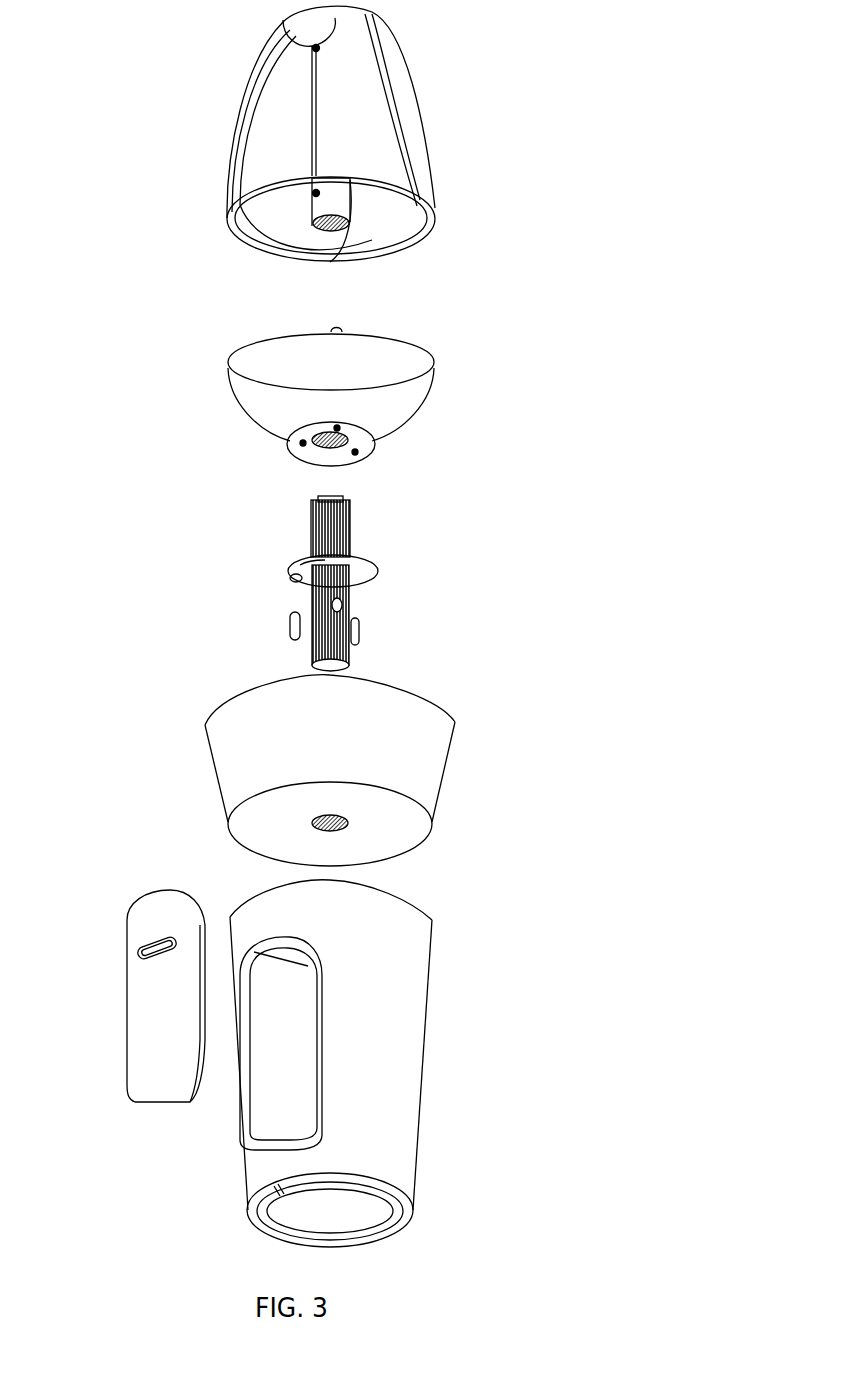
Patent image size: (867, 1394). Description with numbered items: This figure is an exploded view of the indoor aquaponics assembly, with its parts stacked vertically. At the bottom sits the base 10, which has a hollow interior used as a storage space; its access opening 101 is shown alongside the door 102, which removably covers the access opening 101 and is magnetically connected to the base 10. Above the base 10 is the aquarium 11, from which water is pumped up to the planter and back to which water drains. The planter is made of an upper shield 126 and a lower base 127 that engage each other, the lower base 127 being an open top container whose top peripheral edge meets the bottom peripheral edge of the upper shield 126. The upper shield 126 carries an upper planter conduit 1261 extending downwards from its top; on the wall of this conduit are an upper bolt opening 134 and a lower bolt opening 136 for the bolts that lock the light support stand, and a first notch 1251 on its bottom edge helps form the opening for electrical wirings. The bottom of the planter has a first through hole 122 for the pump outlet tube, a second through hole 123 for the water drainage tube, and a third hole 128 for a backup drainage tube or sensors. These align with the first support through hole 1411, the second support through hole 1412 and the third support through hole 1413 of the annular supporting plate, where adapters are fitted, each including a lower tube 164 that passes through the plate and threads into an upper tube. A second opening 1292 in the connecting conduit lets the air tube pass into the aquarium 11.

The base 10 is at (445, 1038).
The access opening 101 is at (277, 1100).
The door 102 is at (165, 1072).
The aquarium 11 is at (467, 777).
The first through hole 122 is at (338, 428).
The second through hole 123 is at (357, 450).
The upper shield 126 is at (438, 120).
The first notch 1251 is at (310, 212).
The upper planter conduit 1261 is at (315, 130).
The lower base 127 is at (445, 388).
The third hole 128 is at (301, 443).
The second opening 1292 is at (315, 573).
The bolt opening 134 is at (313, 50).
The bolt opening 136 is at (312, 195).
The first support through hole 1411 is at (343, 560).
The second support through hole 1412 is at (348, 587).
The third support through hole 1413 is at (297, 577).
The lower tube 164 is at (292, 630).